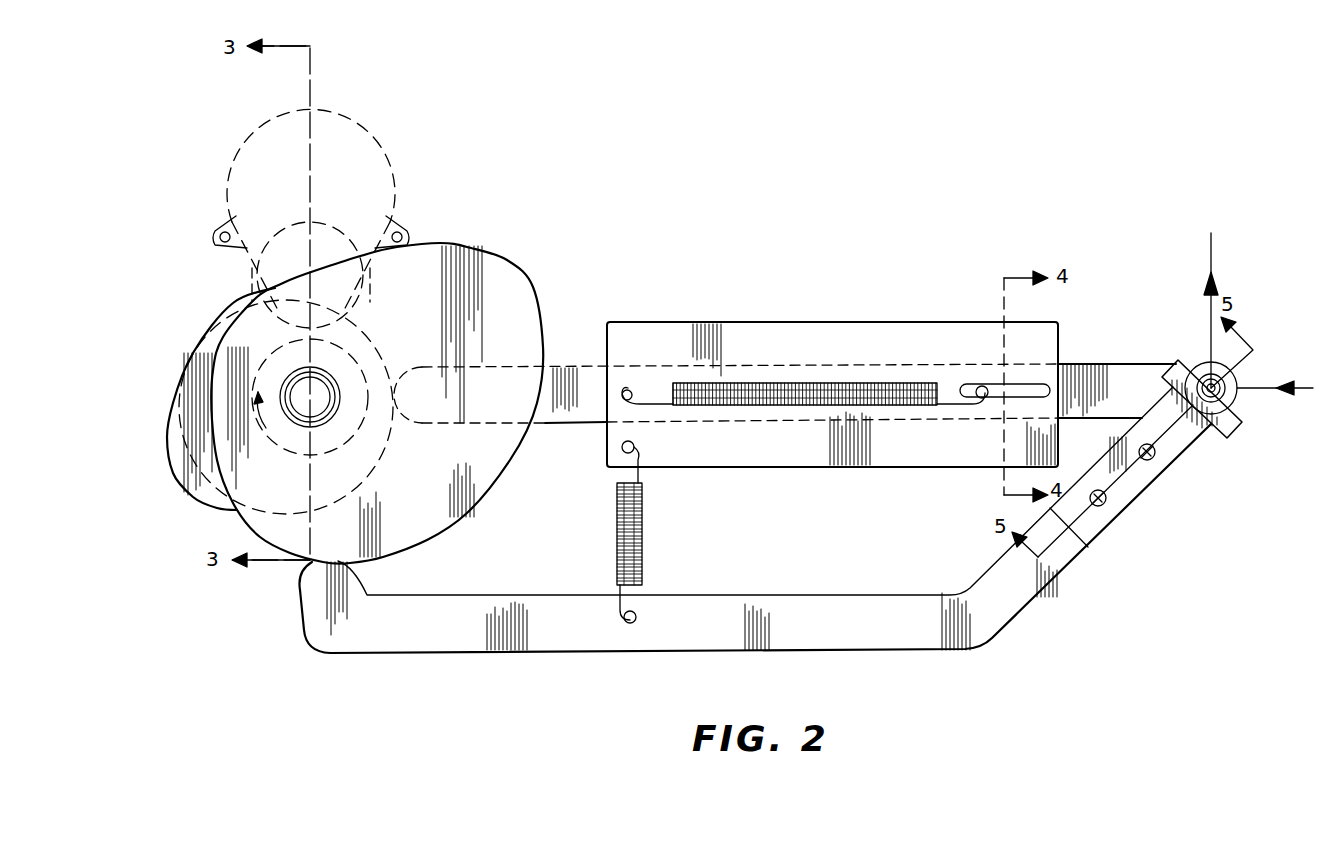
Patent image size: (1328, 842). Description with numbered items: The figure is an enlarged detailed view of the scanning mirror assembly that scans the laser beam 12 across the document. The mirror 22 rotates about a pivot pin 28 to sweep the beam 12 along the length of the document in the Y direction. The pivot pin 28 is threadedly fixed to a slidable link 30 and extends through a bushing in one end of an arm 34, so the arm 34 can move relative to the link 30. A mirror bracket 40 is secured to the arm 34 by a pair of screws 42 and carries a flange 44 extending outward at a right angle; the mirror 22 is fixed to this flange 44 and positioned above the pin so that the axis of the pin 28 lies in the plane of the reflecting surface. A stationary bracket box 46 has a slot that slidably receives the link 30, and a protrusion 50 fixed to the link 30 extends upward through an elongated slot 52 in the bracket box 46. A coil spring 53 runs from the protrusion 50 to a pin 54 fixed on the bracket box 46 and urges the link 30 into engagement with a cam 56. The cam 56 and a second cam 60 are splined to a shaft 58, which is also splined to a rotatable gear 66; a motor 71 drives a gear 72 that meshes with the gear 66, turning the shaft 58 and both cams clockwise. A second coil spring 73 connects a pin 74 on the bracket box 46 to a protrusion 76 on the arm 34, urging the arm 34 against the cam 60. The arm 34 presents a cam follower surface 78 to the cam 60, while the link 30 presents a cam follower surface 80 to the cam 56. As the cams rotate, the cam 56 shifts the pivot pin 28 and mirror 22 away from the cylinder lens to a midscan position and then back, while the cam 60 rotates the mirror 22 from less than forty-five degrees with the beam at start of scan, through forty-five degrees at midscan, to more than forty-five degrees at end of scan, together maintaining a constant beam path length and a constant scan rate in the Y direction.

The beam 12 is at (1262, 388).
The mirror 22 is at (1190, 365).
The pivot pin 28 is at (1233, 394).
The slidable link 30 is at (563, 416).
The arm 34 is at (805, 595).
The mirror bracket 40 is at (1090, 529).
The screws 42 is at (1112, 502).
The flange 44 is at (1170, 400).
The bracket box 46 is at (802, 322).
The protrusion 50 is at (982, 386).
The elongated slot 52 is at (1022, 390).
The coil spring 53 is at (769, 388).
The pin 54 is at (632, 385).
The cam 56 is at (182, 386).
The shaft 58 is at (322, 388).
The second cam 60 is at (533, 278).
The rotatable gear 66 is at (388, 360).
The motor 71 is at (394, 172).
The gear 72 is at (364, 296).
The coil spring 73 is at (645, 557).
The pin 74 is at (641, 448).
The protrusion 76 is at (642, 617).
The cam follower surface 78 is at (308, 566).
The cam follower surface 80 is at (395, 408).